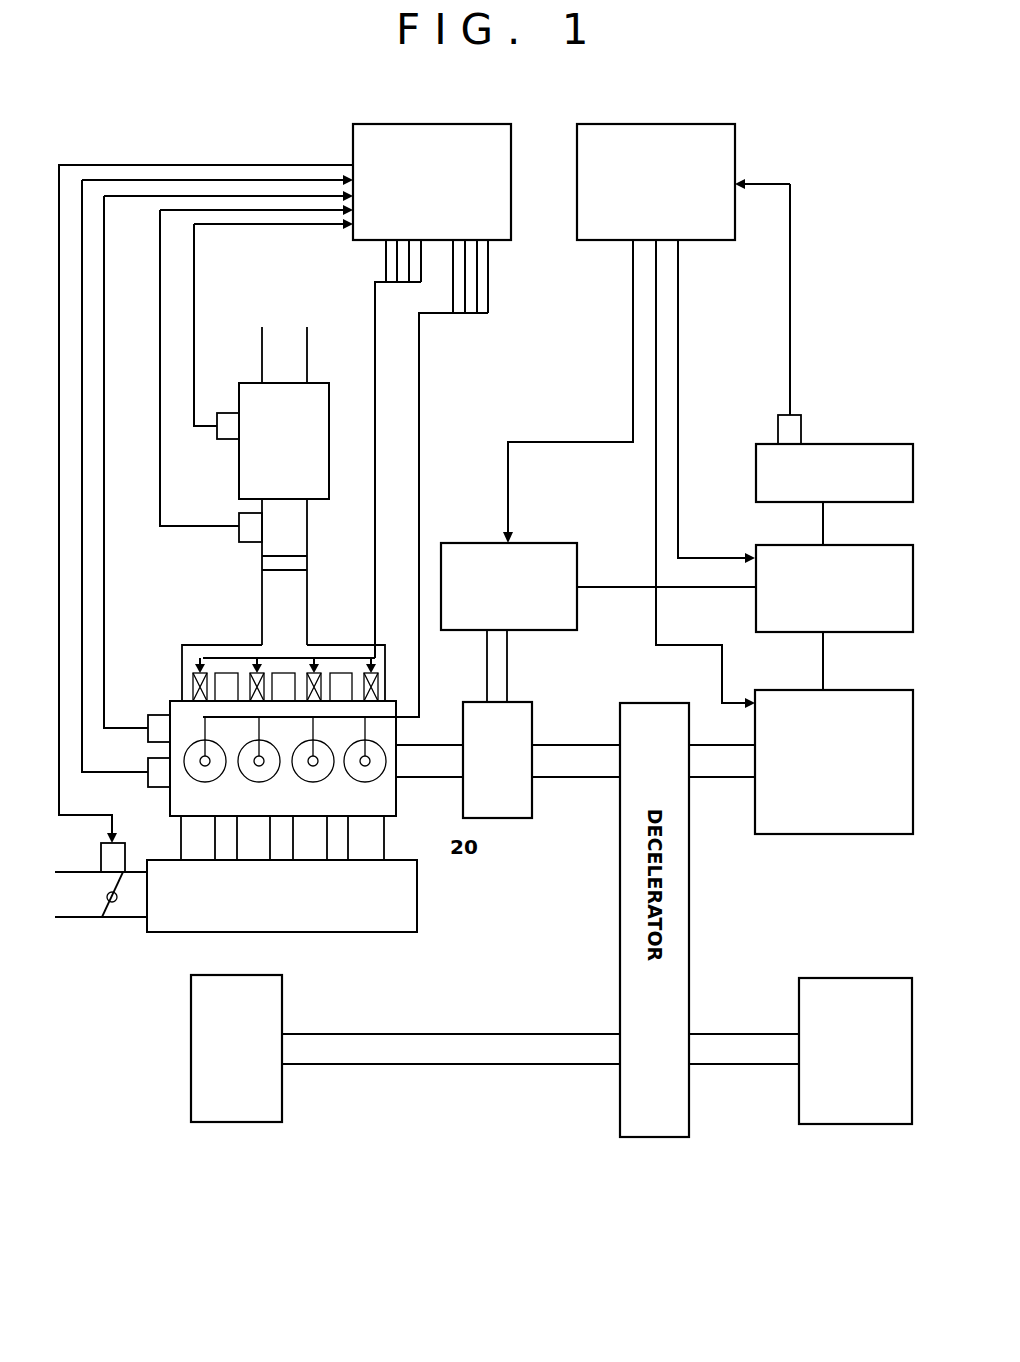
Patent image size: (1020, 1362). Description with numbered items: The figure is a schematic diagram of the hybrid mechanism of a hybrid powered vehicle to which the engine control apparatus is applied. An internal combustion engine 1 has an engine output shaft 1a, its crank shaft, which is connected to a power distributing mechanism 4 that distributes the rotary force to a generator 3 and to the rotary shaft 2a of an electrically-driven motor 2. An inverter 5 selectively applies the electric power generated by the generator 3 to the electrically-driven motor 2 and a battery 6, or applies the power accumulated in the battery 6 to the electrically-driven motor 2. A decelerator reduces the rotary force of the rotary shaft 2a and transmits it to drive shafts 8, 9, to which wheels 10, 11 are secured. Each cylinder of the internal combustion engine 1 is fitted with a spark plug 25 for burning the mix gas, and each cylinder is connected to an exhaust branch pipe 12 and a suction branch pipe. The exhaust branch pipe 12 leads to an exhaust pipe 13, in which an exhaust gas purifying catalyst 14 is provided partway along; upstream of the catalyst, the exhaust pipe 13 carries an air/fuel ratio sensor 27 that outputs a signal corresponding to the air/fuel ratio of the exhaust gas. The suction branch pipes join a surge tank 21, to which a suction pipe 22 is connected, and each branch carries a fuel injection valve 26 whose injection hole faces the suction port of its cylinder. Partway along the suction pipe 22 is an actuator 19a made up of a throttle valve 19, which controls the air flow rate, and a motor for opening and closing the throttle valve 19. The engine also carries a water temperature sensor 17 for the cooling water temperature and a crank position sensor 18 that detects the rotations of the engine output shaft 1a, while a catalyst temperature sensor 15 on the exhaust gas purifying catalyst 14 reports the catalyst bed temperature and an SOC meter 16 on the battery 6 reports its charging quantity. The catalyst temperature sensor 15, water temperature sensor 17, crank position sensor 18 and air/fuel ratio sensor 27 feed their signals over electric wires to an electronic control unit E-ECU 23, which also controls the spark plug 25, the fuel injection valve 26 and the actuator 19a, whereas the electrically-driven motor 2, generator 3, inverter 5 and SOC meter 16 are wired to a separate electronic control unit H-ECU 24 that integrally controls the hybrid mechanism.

The internal combustion engine 1 is at (170, 802).
The engine output shaft 1a is at (431, 752).
The electrically-driven motor 2 is at (860, 835).
The rotary shaft 2a is at (567, 772).
The generator 3 is at (550, 543).
The power distributing mechanism 4 is at (532, 716).
The inverter 5 is at (865, 545).
The battery 6 is at (880, 444).
The drive shaft 8 is at (532, 1064).
The drive shaft 9 is at (758, 1064).
The wheel 10 is at (237, 1122).
The wheel 11 is at (862, 1124).
The exhaust branch pipe 12 is at (308, 598).
The exhaust pipe 13 is at (307, 528).
The exhaust gas purifying catalyst 14 is at (326, 383).
The catalyst temperature sensor 15 is at (226, 420).
The SOC meter 16 is at (801, 430).
The water temperature sensor 17 is at (148, 718).
The crank position sensor 18 is at (150, 772).
The throttle valve 19 is at (110, 906).
The actuator 19a is at (101, 862).
The surge tank 21 is at (380, 932).
The suction pipe 22 is at (133, 918).
The electronic control unit (E-ECU) 23 is at (490, 124).
The electronic control unit (H-ECU) 24 is at (712, 124).
The spark plug 25 is at (365, 763).
The fuel injection valve 26 is at (192, 685).
The air/fuel ratio sensor 27 is at (239, 542).